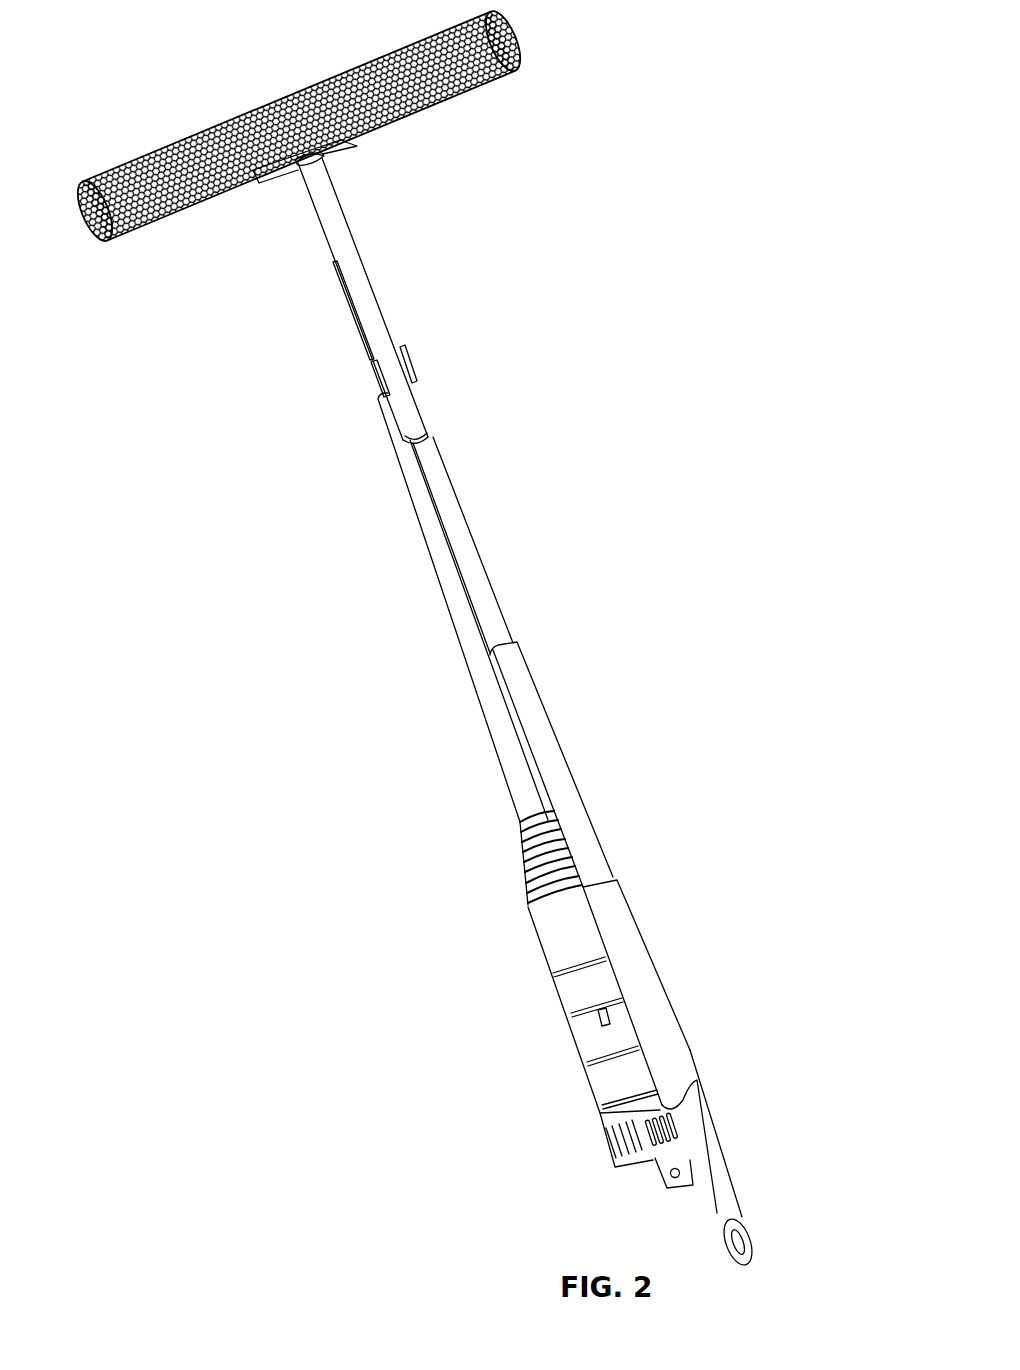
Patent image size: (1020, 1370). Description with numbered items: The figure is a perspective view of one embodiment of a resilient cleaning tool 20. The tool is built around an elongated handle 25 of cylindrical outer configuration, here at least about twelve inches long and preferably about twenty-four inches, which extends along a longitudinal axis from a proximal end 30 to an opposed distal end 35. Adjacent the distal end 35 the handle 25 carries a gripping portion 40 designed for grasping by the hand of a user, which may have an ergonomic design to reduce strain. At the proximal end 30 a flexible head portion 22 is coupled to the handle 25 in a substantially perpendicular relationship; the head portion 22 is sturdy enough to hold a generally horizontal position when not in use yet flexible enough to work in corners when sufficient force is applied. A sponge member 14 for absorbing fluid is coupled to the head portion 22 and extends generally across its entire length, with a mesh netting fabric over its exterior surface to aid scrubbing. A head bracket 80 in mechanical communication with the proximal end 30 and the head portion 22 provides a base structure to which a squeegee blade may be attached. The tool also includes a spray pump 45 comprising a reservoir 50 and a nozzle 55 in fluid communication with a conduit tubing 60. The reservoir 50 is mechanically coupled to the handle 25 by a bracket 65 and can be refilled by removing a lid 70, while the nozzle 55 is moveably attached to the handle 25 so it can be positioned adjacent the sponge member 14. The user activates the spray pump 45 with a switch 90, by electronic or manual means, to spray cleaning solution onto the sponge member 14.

The sponge member 14 is at (313, 123).
The flexible head portion 22 is at (143, 163).
The head bracket 80 is at (337, 148).
The proximal end 30 is at (322, 230).
The nozzle 55 is at (335, 282).
The resilient cleaning tool 20 is at (405, 634).
The conduit tubing 60 is at (418, 494).
The handle 25 is at (537, 717).
The spray pump 45 is at (516, 869).
The gripping portion 40 is at (655, 993).
The bracket 65 is at (575, 1027).
The distal end 35 is at (692, 1052).
The reservoir 50 is at (603, 1078).
The switch 90 is at (607, 1150).
The lid 70 is at (657, 1173).